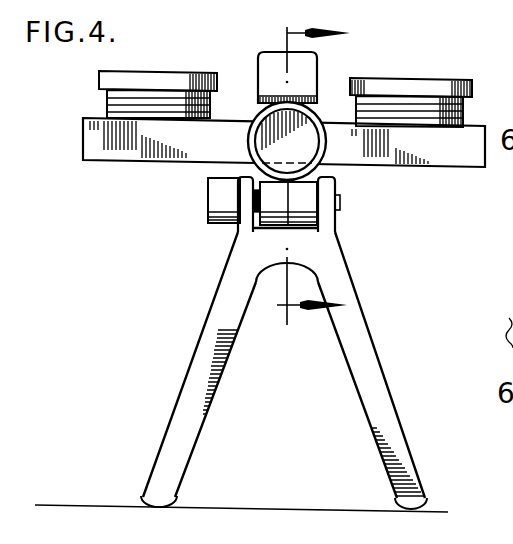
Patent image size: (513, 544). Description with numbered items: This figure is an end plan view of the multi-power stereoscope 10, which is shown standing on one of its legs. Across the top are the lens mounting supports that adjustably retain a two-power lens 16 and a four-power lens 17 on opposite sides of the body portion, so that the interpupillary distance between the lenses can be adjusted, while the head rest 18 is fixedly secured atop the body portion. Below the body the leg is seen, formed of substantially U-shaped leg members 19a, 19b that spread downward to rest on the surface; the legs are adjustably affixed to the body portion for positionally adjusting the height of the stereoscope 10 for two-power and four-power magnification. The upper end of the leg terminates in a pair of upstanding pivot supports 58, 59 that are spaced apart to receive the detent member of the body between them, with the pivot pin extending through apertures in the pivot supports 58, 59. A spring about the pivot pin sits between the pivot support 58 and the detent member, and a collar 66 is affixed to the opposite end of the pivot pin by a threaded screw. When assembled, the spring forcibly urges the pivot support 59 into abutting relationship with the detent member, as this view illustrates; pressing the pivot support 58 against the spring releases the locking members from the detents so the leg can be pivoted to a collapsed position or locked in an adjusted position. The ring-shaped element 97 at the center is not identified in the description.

The multi-power stereoscope 10 is at (296, 181).
The two-power lens 16 is at (172, 56).
The four-power lens 17 is at (418, 80).
The head rest 18 is at (310, 73).
The ring 97 is at (247, 133).
The collar 66 is at (215, 192).
The pivot support 58 is at (242, 220).
The pivot support 59 is at (332, 224).
The leg member 19a is at (185, 433).
The leg member 19b is at (357, 393).